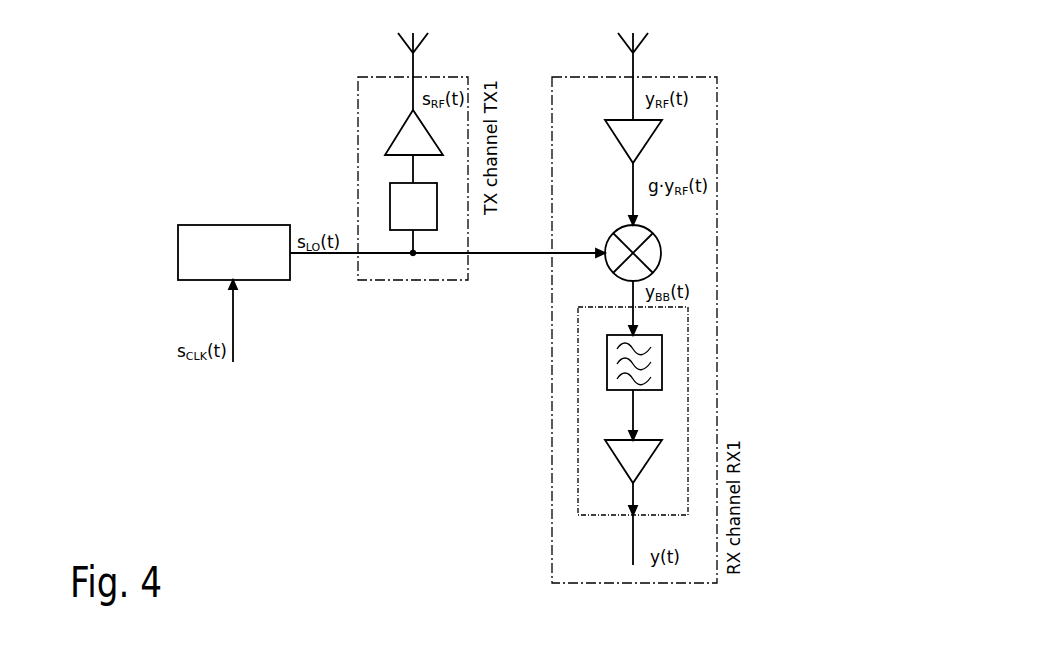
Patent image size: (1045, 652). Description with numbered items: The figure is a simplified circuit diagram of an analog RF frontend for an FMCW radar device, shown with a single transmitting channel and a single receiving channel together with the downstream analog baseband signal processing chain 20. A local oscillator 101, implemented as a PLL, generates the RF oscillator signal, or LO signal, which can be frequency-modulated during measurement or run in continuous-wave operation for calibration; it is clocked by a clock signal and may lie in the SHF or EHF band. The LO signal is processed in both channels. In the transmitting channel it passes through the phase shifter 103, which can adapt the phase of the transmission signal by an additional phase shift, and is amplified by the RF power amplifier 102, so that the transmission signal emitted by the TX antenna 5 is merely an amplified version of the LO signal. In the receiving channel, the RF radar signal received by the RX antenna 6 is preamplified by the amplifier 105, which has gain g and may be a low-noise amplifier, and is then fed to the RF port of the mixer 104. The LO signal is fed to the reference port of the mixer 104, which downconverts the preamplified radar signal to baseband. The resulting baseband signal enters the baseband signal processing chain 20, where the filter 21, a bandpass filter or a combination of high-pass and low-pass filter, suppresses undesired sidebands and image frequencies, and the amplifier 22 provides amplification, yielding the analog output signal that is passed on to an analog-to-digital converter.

The TX antenna 5 is at (405, 40).
The RX antenna 6 is at (640, 45).
The baseband signal processing chain 20 is at (450, 438).
The filter 21 is at (607, 365).
The amplifier 22 is at (618, 462).
The local oscillator 101 is at (226, 225).
The RF power amplifier 102 is at (390, 148).
The phase shifter 103 is at (390, 185).
The mixer 104 is at (661, 243).
The amplifier 105 is at (653, 135).